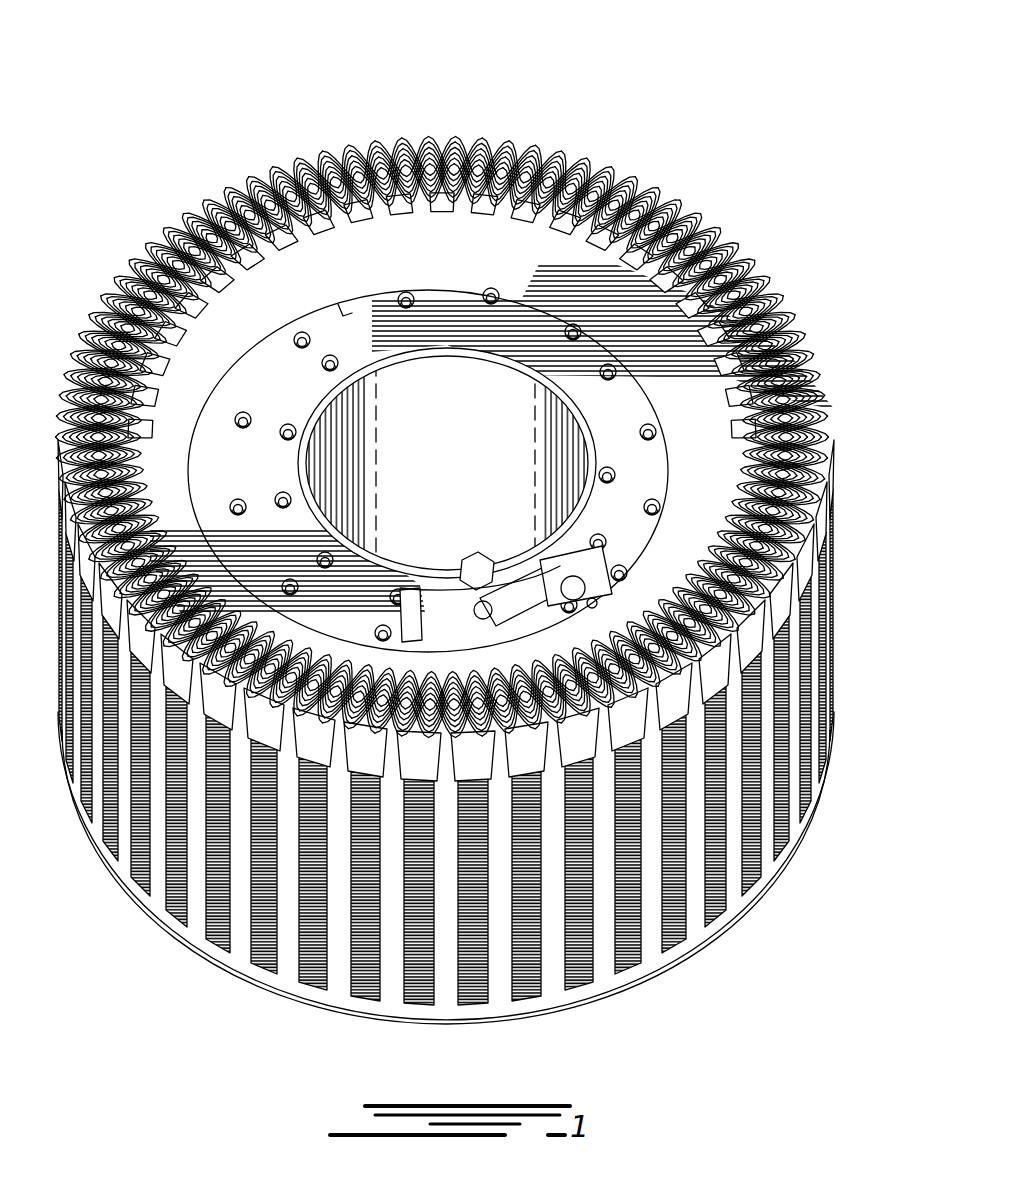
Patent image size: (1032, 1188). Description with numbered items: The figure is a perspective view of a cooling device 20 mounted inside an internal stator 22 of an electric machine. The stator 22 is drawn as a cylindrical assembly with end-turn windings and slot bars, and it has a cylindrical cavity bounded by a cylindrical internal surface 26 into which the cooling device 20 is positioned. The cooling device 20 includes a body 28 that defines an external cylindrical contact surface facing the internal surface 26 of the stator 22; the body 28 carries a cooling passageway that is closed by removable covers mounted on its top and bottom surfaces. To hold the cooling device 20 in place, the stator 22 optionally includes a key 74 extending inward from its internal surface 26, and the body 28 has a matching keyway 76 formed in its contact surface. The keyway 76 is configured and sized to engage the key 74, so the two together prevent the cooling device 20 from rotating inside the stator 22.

The cooling device 20 is at (445, 312).
The internal stator 22 is at (557, 262).
The cylindrical internal surface 26 is at (616, 383).
The body 28 is at (604, 562).
The key 74 is at (343, 316).
The keyway 76 is at (370, 337).